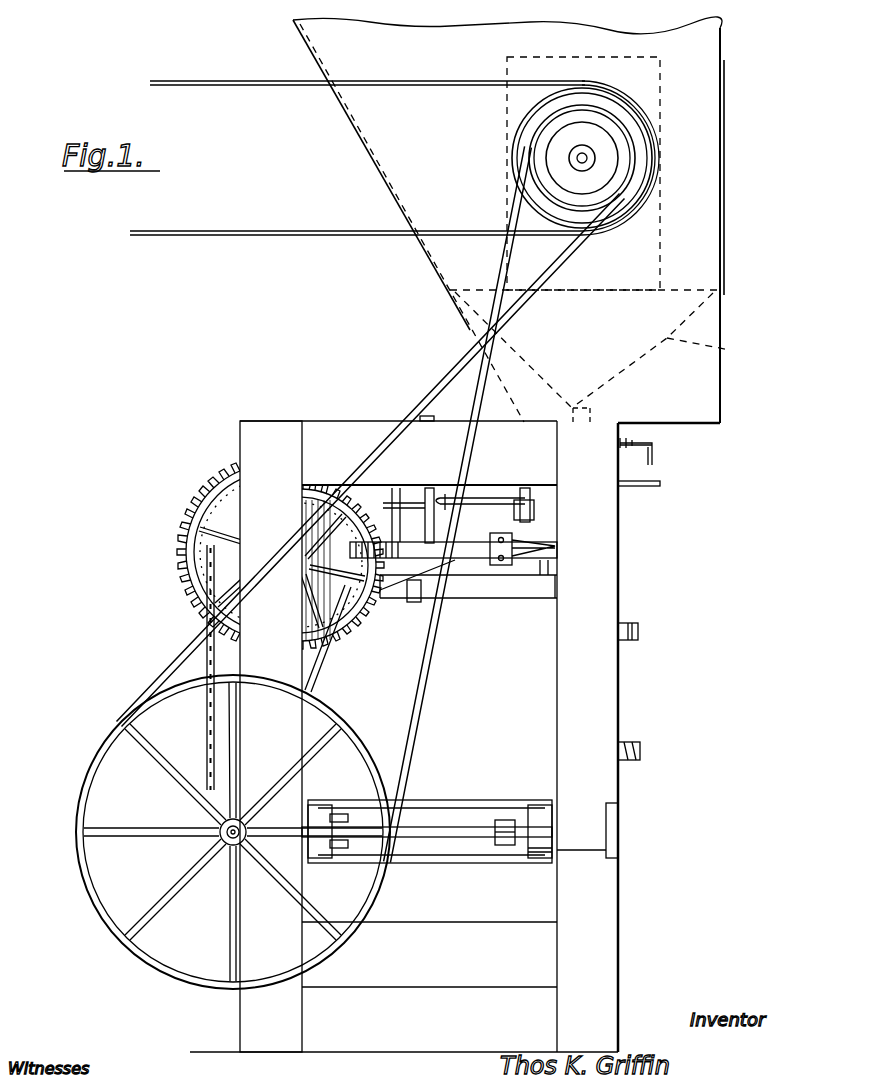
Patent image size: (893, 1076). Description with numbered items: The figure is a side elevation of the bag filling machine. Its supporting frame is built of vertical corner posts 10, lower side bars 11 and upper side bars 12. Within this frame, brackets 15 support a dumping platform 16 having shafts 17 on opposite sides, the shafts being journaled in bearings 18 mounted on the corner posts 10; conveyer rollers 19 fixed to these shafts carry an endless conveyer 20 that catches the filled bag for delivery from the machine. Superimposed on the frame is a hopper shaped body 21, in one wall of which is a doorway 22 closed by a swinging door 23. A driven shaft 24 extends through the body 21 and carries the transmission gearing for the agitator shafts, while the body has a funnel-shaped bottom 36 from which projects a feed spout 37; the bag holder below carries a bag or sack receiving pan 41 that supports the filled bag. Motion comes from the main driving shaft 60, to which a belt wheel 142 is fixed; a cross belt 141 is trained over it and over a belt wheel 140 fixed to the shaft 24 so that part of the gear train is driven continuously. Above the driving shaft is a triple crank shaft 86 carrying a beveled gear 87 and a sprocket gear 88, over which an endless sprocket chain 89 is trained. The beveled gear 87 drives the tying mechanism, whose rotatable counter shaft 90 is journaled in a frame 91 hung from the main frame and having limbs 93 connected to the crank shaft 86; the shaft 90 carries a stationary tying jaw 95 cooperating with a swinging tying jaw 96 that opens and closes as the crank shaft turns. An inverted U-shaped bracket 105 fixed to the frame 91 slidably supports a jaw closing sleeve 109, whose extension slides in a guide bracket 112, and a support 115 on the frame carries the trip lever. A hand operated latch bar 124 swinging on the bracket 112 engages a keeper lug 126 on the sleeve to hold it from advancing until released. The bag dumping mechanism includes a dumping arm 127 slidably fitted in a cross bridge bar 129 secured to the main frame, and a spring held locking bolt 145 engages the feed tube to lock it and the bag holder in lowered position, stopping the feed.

The vertical corner posts 10 is at (604, 680).
The lower side bars 11 is at (457, 988).
The upper side bars 12 is at (330, 430).
The brackets 15 is at (503, 848).
The dumping platform 16 is at (447, 808).
The shafts 17 is at (418, 842).
The bearings 18 is at (618, 852).
The conveyer rollers 19 is at (538, 850).
The endless conveyer 20 is at (618, 808).
The hopper shaped body 21 is at (382, 148).
The doorway 22 is at (728, 152).
The swinging door 23 is at (730, 237).
The driven shaft 24 is at (590, 160).
The funnel-shaped bottom 36 is at (606, 232).
The feed spout 37 is at (592, 412).
The bag or sack receiving pan 41 is at (642, 752).
The main driving shaft 60 is at (230, 834).
The triple crank shaft 86 is at (283, 562).
The beveled gear 87 is at (200, 523).
The sprocket gear 88 is at (212, 575).
The endless sprocket chain 89 is at (207, 727).
The rotatable counter shaft 90 is at (513, 582).
The frame 91 is at (415, 592).
The limbs 93 is at (308, 536).
The stationary tying jaw 95 is at (548, 556).
The swinging tying jaw 96 is at (553, 537).
The inverted U-shaped bracket 105 is at (500, 498).
The jaw closing sleeve 109 is at (528, 488).
The guide bracket 112 is at (432, 488).
The support 115 is at (412, 503).
The hand operated latch bar 124 is at (648, 487).
The keeper lug 126 is at (460, 602).
The dumping arm 127 is at (543, 600).
The cross bridge bar 129 is at (428, 416).
The belt wheel 140 is at (605, 175).
The cross belt 141 is at (465, 350).
The belt wheel 142 is at (343, 722).
The spring held locking bolt 145 is at (654, 452).